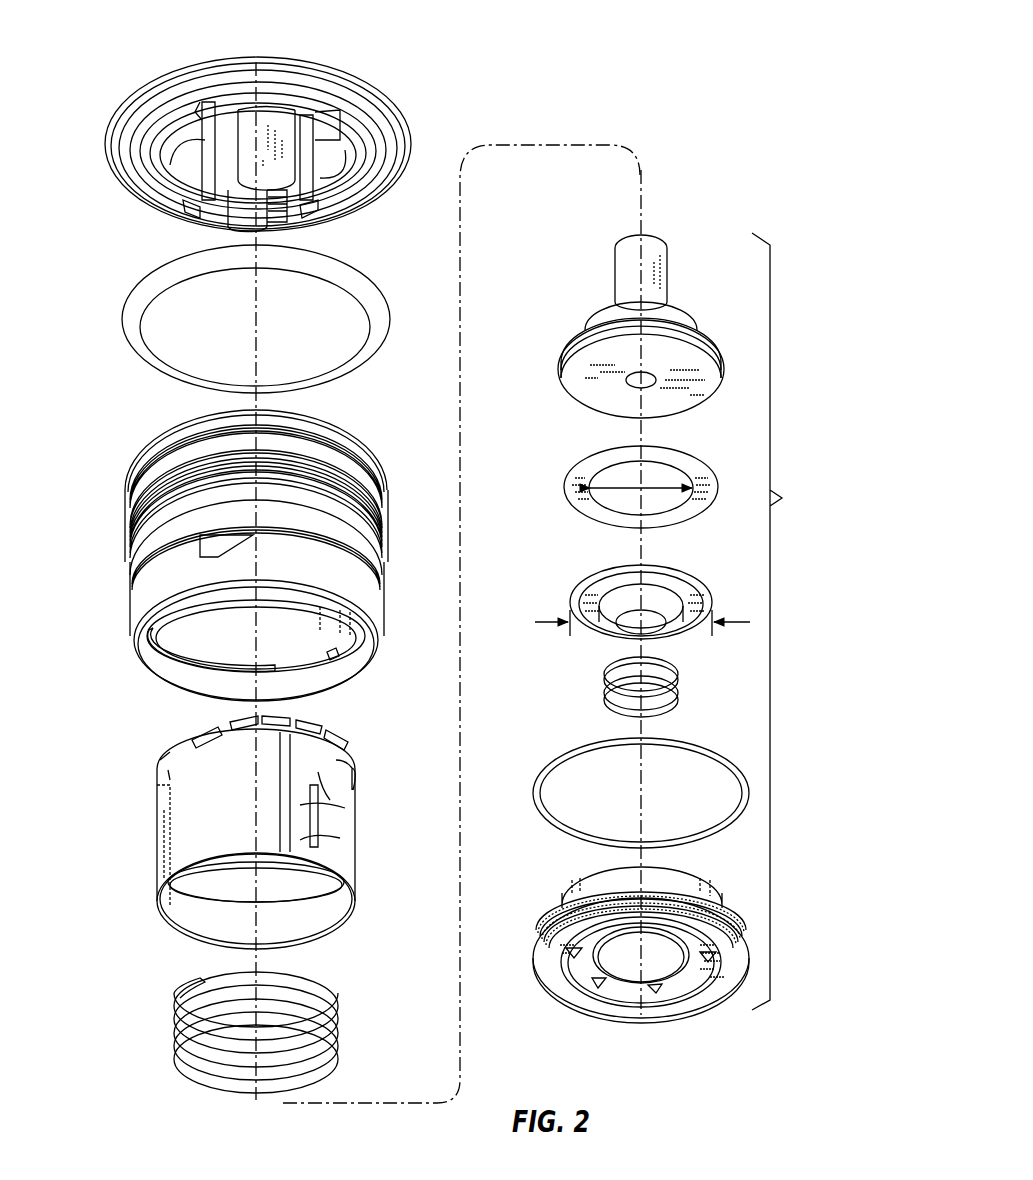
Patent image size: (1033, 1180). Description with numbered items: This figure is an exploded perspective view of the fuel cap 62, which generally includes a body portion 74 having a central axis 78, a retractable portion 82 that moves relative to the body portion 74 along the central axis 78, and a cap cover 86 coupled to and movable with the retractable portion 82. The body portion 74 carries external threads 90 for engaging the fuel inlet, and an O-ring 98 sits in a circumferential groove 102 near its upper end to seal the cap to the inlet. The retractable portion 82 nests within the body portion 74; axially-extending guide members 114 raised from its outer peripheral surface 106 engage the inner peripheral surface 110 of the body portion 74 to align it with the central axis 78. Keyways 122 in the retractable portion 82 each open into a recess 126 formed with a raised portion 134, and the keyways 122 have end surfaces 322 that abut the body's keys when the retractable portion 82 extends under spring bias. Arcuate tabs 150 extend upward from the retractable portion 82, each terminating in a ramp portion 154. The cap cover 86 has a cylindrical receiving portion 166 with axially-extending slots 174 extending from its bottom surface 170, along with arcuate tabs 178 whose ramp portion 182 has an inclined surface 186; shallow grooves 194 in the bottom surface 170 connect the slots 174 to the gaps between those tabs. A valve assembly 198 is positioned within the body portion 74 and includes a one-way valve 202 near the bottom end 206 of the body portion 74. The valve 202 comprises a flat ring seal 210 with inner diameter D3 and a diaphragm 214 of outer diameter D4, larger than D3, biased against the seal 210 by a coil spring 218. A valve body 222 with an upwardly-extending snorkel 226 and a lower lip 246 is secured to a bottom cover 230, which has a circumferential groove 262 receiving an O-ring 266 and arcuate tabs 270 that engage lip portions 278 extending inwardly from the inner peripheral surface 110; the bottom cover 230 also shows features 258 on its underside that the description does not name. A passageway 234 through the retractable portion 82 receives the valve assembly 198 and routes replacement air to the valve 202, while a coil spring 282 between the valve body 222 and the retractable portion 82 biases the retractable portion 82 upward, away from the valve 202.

The fuel cap 62 is at (562, 108).
The body portion 74 is at (252, 556).
The central axis 78 is at (462, 512).
The retractable portion 82 is at (246, 826).
The cap cover 86 is at (280, 45).
The external threads 90 is at (367, 556).
The O-ring 98 is at (130, 320).
The circumferential groove 102 is at (162, 460).
The outer peripheral surface 106 is at (246, 828).
The inner peripheral surface 110 is at (241, 638).
The guide members 114 is at (282, 757).
The keyways 122 is at (302, 812).
The recess 126 is at (340, 762).
The raised portion 134 is at (335, 782).
The arcuate tabs 150 is at (340, 744).
The ramp portion 154 is at (236, 720).
The receiving portion 166 is at (272, 118).
The bottom surface 170 is at (332, 188).
The slots 174 is at (190, 205).
The arcuate tabs 178 is at (173, 113).
The ramp portion 182 is at (148, 195).
The inclined surface 186 is at (328, 198).
The grooves 194 is at (178, 133).
The valve assembly 198 is at (464, 641).
The valve 202 is at (623, 549).
The bottom end 206 is at (372, 645).
The seal 210 is at (596, 470).
The diaphragm 214 is at (598, 622).
The coil spring 218 is at (604, 700).
The valve body 222 is at (610, 318).
The snorkel 226 is at (627, 264).
The bottom cover 230 is at (439, 955).
The passageway 234 is at (585, 890).
The lip 246 is at (570, 352).
The retaining tabs 258 is at (713, 955).
The circumferential groove 262 is at (540, 935).
The O-ring 266 is at (545, 773).
The arcuate tabs 270 is at (712, 892).
The lip portions 278 is at (178, 668).
The coil spring 282 is at (178, 1023).
The end surfaces 322 is at (302, 836).
The inner diameter D3 is at (668, 488).
The outer diameter D4 is at (629, 621).